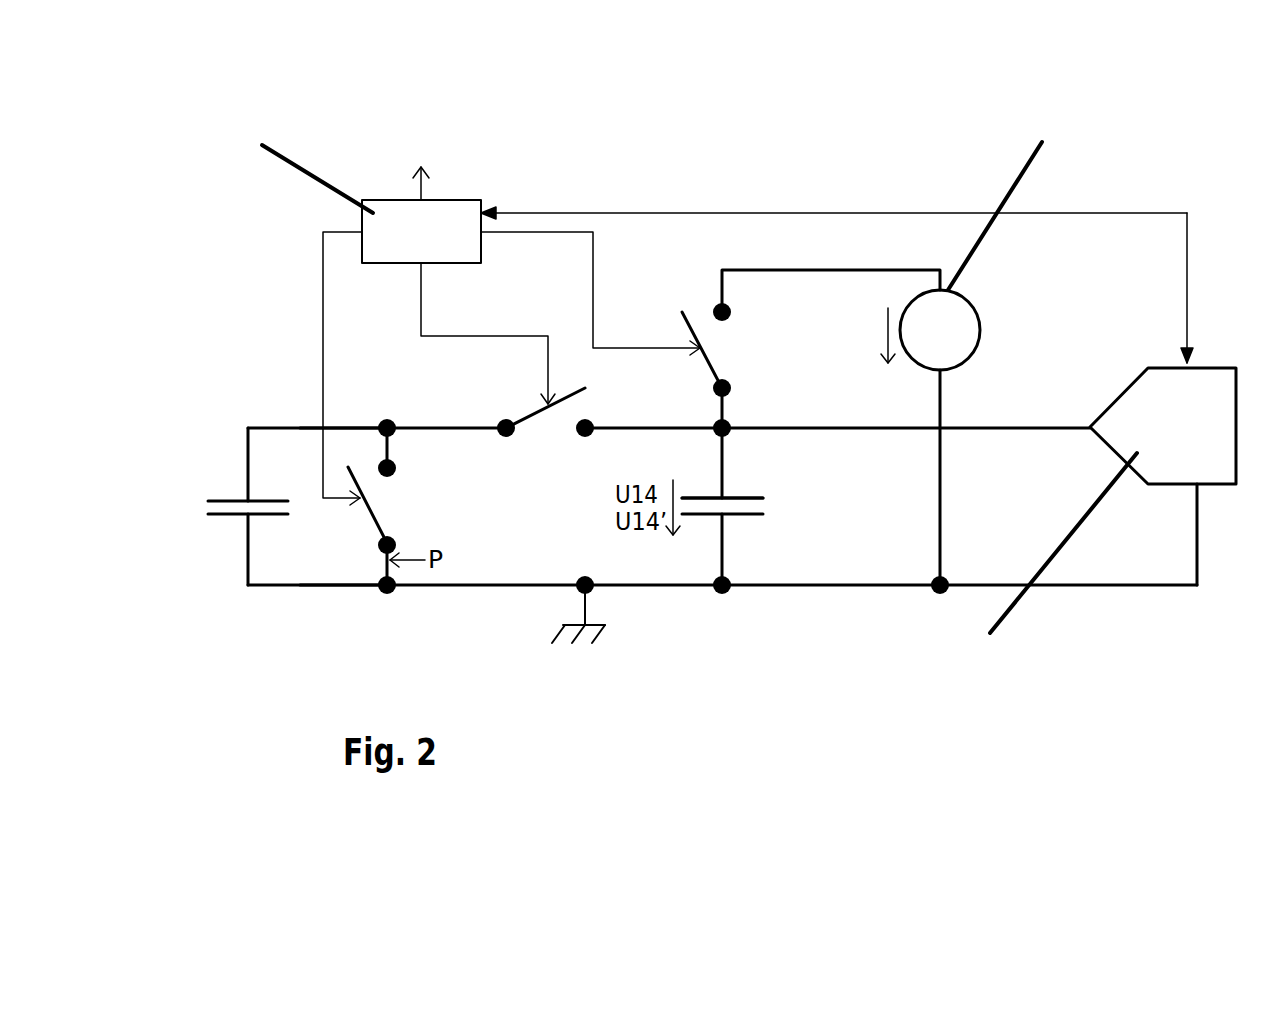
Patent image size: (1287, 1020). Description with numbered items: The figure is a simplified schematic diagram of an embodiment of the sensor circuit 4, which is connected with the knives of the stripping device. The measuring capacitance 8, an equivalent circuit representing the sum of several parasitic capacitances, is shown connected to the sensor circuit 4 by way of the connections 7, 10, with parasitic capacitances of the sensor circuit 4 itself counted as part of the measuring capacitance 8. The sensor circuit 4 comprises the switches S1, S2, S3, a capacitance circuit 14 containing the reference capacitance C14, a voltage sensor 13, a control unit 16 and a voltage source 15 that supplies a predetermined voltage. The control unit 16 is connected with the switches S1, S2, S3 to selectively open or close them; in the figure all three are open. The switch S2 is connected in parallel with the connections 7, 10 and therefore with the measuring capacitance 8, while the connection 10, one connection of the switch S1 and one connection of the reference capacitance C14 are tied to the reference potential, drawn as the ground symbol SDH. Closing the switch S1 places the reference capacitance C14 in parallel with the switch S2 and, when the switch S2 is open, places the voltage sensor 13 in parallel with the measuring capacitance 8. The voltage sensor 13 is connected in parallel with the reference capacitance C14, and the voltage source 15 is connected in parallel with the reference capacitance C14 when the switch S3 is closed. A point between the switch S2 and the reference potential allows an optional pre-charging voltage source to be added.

The sensor circuit 4 is at (910, 178).
The connection 7 is at (298, 427).
The measuring capacitance 8 is at (222, 517).
The connection 10 is at (297, 587).
The voltage sensor 13 is at (1132, 380).
The capacitance circuit 14 is at (743, 522).
The voltage source 15 is at (958, 292).
The control unit 16 is at (469, 198).
The switch S1 is at (545, 435).
The switch S2 is at (390, 506).
The switch S3 is at (811, 349).
The reference capacitance C14 is at (745, 497).
The ground connection SDH is at (607, 629).